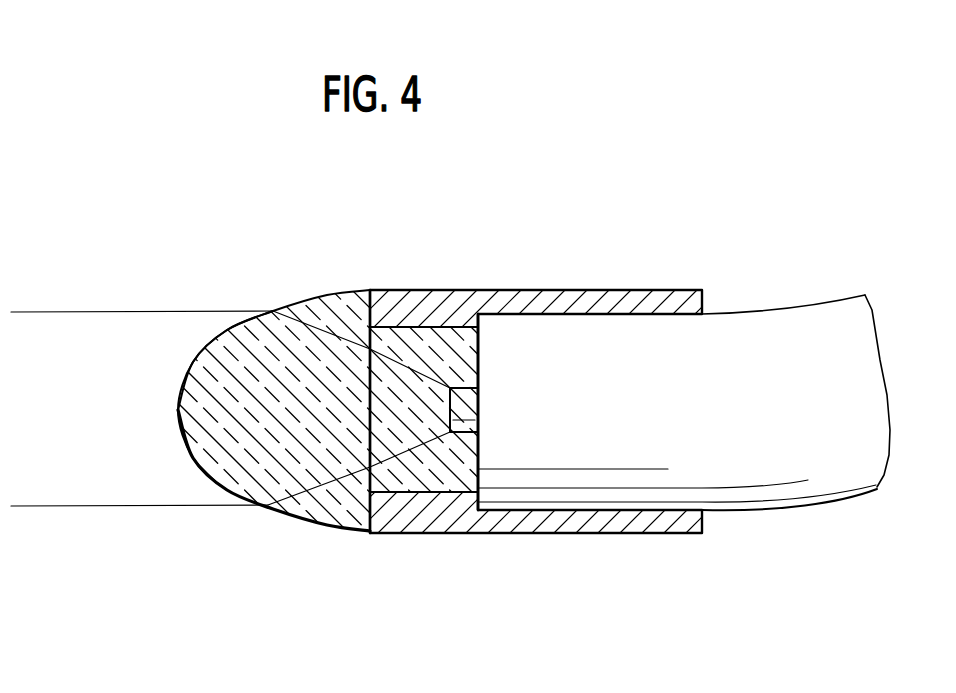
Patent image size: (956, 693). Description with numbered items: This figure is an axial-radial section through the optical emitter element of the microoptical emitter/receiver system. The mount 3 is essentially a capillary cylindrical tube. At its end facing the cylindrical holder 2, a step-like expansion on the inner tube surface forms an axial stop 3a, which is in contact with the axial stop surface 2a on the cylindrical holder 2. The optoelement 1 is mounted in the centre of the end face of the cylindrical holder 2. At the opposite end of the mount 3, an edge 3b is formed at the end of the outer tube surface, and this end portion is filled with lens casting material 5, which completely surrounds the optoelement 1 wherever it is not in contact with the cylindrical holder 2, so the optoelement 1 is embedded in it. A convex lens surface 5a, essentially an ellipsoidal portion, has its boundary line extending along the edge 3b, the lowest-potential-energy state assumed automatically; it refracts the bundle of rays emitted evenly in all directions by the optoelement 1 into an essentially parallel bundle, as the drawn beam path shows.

The optoelement 1 is at (468, 405).
The cylindrical holder 2 is at (837, 473).
The axial stop surface 2a is at (481, 331).
The mount 3 is at (623, 525).
The axial stop 3a is at (477, 508).
The edge 3b is at (368, 535).
The lens casting material 5 is at (270, 448).
The convex lens surface 5a is at (183, 440).